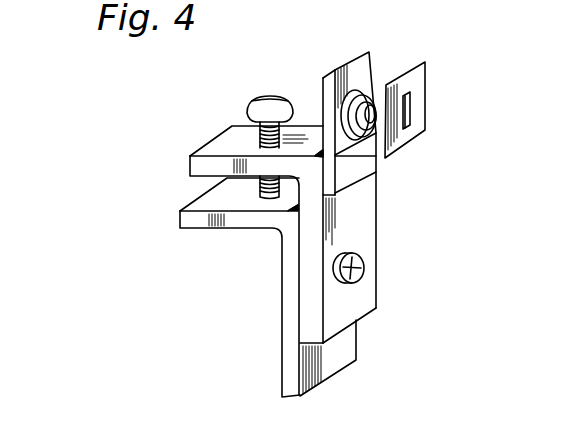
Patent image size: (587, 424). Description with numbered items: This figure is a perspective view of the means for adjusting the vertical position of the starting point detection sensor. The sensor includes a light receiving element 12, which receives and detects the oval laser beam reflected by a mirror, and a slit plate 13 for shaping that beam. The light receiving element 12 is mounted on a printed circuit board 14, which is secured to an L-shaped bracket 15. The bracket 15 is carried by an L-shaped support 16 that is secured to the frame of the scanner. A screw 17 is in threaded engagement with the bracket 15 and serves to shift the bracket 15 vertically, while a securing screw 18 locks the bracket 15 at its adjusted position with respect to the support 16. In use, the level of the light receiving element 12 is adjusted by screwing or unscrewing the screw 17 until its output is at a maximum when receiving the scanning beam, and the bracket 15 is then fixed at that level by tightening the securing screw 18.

The light receiving element 12 is at (378, 100).
The slit plate 13 is at (426, 106).
The printed circuit board 14 is at (363, 52).
The L-shaped bracket 15 is at (377, 219).
The L-shaped support 16 is at (282, 307).
The screw 17 is at (278, 95).
The securing screw 18 is at (365, 272).